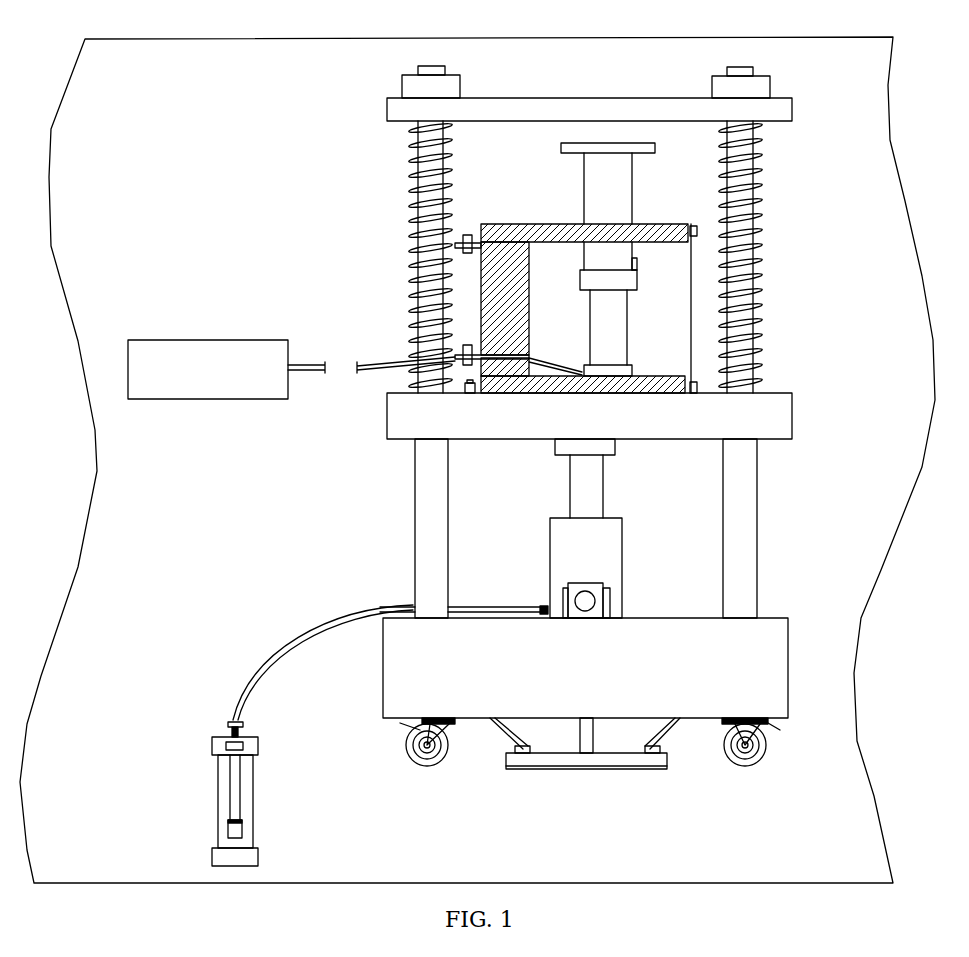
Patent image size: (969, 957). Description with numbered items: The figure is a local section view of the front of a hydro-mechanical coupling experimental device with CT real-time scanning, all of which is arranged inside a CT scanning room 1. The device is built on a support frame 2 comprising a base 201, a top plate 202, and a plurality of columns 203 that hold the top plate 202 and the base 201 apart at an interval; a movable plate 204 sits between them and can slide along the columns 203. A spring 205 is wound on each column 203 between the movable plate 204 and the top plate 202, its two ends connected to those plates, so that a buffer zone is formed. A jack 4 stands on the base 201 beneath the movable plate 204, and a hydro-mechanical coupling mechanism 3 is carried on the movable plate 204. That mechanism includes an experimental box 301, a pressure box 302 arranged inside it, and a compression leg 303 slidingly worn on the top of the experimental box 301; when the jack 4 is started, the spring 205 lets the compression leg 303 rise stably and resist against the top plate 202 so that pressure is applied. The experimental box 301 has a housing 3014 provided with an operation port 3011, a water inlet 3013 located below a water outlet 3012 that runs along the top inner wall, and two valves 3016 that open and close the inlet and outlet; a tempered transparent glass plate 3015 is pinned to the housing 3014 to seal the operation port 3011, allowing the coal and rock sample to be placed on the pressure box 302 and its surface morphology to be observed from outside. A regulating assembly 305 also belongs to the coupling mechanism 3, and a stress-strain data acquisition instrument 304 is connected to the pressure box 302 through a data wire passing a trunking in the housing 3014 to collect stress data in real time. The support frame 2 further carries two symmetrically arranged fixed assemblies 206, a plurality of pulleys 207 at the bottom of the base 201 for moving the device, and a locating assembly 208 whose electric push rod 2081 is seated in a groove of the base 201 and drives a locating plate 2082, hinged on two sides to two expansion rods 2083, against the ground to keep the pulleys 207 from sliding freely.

The CT scanning room 1 is at (597, 46).
The support frame 2 is at (766, 72).
The base 201 is at (778, 630).
The top plate 202 is at (781, 104).
The column 203 is at (761, 276).
The movable plate 204 is at (781, 404).
The spring 205 is at (766, 320).
The fixed assembly 206 is at (603, 579).
The pulley 207 is at (762, 739).
The locating assembly 208 is at (576, 748).
The electric push rod 2081 is at (588, 722).
The locating plate 2082 is at (627, 763).
The expansion rod 2083 is at (528, 738).
The hydro-mechanical coupling mechanism 3 is at (520, 274).
The experimental box 301 is at (582, 303).
The operation port 3011 is at (685, 392).
The water outlet 3012 is at (520, 246).
The water inlet 3013 is at (520, 352).
The housing 3014 is at (590, 240).
The tempered transparent glass plate 3015 is at (690, 225).
The valve 3016 is at (468, 256).
The pressure box 302 is at (615, 371).
The compression leg 303 is at (593, 190).
The stress-strain data acquisition instrument 304 is at (238, 350).
The regulating assembly 305 is at (612, 292).
The jack 4 is at (613, 524).